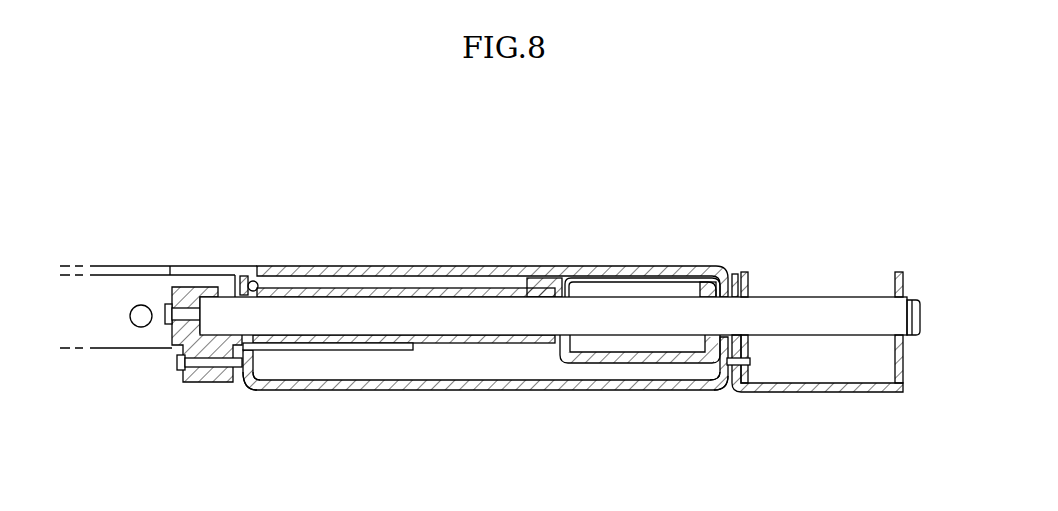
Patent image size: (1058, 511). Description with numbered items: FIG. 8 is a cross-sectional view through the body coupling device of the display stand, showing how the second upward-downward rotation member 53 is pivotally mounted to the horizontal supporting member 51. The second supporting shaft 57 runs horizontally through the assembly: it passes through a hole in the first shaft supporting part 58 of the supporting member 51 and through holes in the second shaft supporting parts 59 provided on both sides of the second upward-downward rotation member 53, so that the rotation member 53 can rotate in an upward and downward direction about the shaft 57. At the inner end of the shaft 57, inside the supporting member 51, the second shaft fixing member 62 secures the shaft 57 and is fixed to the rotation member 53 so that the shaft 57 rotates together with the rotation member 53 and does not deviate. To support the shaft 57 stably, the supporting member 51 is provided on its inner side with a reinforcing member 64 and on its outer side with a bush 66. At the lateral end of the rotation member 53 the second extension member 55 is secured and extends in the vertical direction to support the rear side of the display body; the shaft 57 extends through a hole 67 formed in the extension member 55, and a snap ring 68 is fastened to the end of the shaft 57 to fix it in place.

The supporting member 51 is at (335, 270).
The second upward-downward rotation member 53 is at (515, 391).
The second extension member 55 is at (858, 393).
The second supporting shaft 57 is at (793, 312).
The first shaft supporting part 58 is at (256, 268).
The second shaft supporting part 59 is at (256, 391).
The second shaft fixing member 62 is at (200, 385).
The reinforcing member 64 is at (613, 358).
The bush 66 is at (386, 290).
The hole 67 is at (896, 296).
The snap ring 68 is at (909, 340).